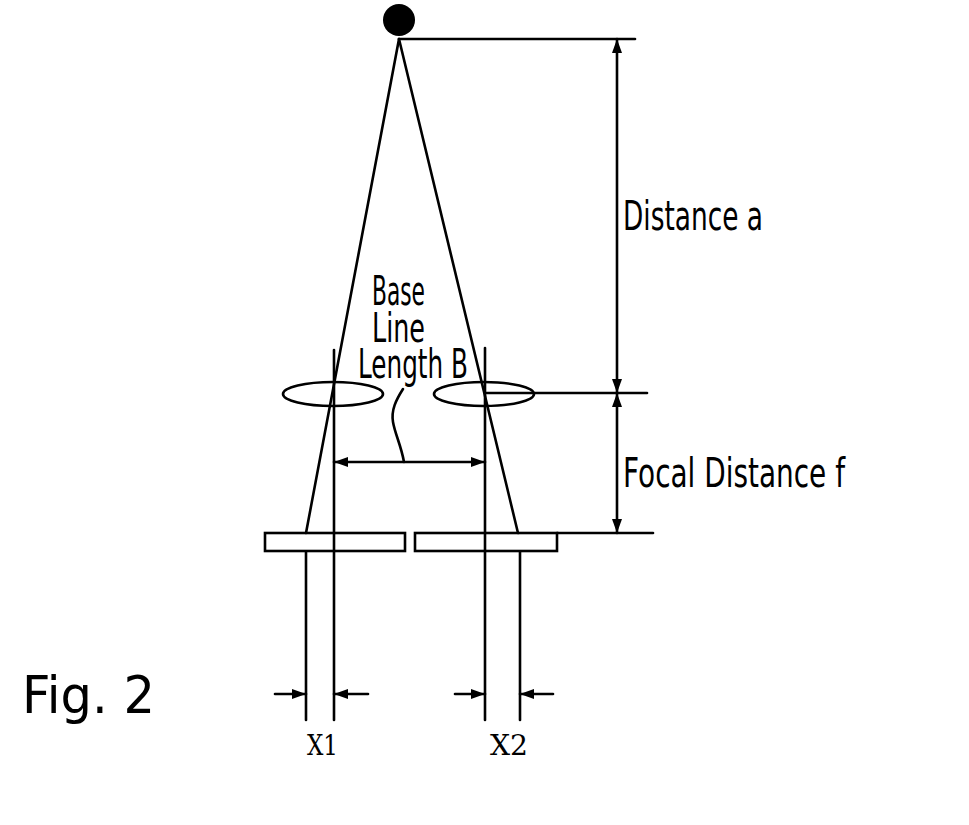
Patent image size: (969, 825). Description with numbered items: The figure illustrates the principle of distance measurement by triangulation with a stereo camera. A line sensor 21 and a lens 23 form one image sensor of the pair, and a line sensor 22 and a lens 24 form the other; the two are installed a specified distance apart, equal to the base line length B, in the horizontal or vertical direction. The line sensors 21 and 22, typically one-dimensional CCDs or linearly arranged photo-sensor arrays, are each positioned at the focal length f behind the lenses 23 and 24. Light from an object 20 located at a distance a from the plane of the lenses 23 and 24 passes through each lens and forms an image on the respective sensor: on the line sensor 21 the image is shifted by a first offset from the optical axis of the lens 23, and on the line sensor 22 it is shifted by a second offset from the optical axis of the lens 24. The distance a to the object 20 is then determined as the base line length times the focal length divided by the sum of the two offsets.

The object 20 is at (384, 23).
The line sensor 21 is at (265, 538).
The line sensor 22 is at (557, 542).
The lens 23 is at (284, 393).
The lens 24 is at (500, 383).